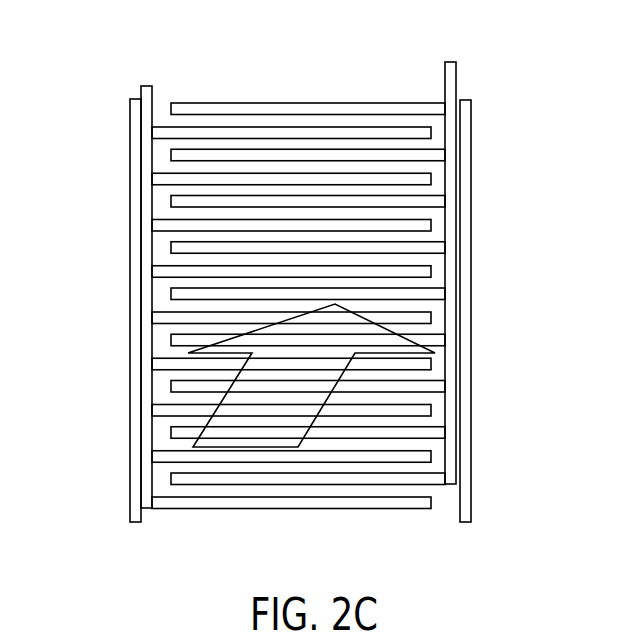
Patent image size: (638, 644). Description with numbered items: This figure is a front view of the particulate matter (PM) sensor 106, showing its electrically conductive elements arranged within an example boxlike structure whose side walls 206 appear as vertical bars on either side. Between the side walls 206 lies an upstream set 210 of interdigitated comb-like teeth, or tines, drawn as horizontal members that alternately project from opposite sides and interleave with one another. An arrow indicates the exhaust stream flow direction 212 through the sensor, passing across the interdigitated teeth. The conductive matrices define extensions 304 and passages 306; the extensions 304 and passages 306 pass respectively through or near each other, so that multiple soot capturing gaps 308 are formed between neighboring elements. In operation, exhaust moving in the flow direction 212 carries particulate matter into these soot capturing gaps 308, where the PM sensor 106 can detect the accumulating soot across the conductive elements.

The particulate matter (PM) sensor 106 is at (403, 66).
The side walls 206 is at (471, 117).
The upstream set 210 is at (246, 93).
The exhaust stream flow direction 212 is at (207, 421).
The extensions 304 is at (312, 486).
The passages 306 is at (162, 489).
The soot capturing gaps 308 is at (425, 489).